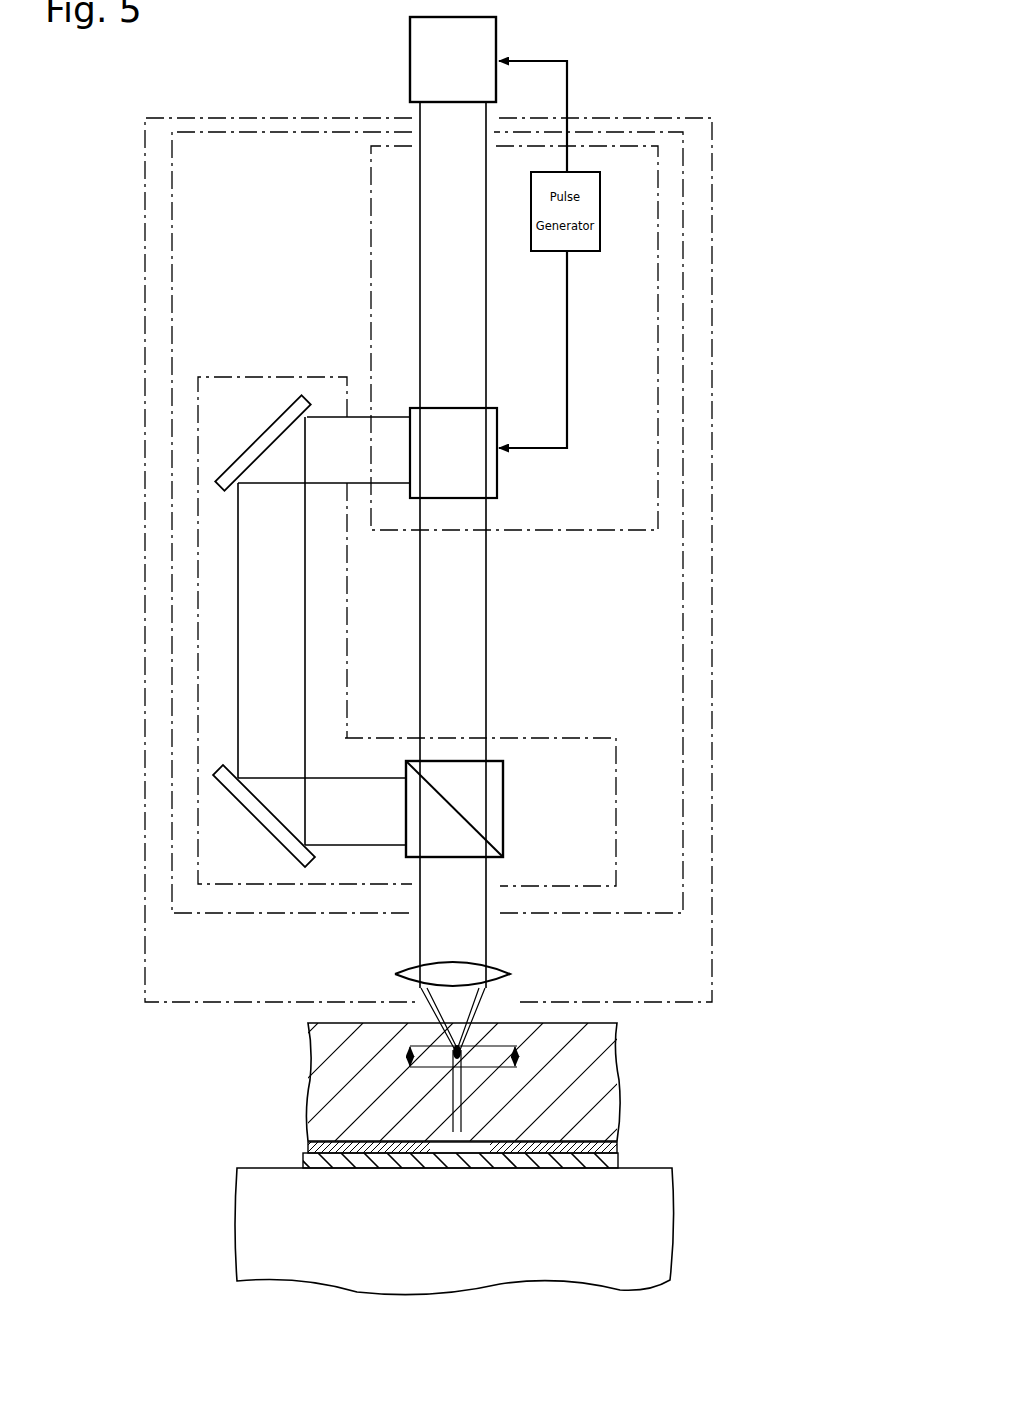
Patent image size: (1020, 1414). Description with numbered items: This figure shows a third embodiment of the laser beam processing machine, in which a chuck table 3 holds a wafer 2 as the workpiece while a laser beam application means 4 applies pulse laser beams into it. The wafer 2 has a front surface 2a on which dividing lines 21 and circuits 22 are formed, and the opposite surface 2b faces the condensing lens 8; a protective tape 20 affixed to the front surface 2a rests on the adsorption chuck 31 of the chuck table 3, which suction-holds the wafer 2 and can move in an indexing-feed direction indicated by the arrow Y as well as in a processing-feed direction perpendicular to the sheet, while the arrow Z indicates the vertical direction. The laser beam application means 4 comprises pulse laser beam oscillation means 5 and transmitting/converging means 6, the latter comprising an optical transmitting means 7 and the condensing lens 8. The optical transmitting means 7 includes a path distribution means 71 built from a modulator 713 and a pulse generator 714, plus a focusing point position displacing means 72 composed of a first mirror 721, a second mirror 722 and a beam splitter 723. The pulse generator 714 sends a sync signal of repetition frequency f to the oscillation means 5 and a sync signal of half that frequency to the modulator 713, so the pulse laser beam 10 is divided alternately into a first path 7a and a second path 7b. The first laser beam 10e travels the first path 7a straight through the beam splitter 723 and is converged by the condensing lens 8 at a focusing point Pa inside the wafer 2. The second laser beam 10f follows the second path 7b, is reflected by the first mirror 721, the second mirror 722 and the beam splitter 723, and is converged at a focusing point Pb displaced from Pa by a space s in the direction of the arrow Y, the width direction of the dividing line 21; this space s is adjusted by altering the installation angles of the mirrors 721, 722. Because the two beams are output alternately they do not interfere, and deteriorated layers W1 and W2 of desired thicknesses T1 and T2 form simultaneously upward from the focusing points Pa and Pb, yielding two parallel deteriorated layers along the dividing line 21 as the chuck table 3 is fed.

The laser beam application means 4 is at (747, 87).
The pulse laser beam oscillation means 5 is at (410, 46).
The transmitting/converging means 6 is at (716, 420).
The optical transmitting means 7 is at (687, 355).
The first path 7a is at (506, 618).
The second path 7b is at (362, 404).
The path distribution means 71 is at (663, 214).
The modulator 713 is at (498, 427).
The pulse generator 714 is at (600, 197).
The focusing point position displacing means 72 is at (250, 375).
The first mirror 721 is at (258, 441).
The second mirror 722 is at (262, 815).
The beam splitter 723 is at (505, 789).
The pulse laser beam 10 is at (419, 190).
The first laser beam 10e is at (418, 592).
The second laser beam 10f is at (323, 486).
The condensing lens 8 is at (492, 976).
The wafer 2 is at (607, 1086).
The front surface 2a is at (612, 1168).
The front surface of workpiece 2b is at (591, 1022).
The protective tape 20 is at (305, 1158).
The dividing line 21 is at (463, 1160).
The circuit 22 is at (372, 1168).
The chuck table 3 is at (236, 1218).
The adsorption chuck 31 is at (652, 1167).
The thickness T1 is at (445, 1056).
The thickness T2 is at (534, 1059).
The deteriorated layer W1 is at (440, 1068).
The deteriorated layer W2 is at (460, 1060).
The focusing point Pa is at (452, 1080).
The focusing point Pb is at (462, 1068).
The space s is at (481, 1118).
The Z-axis direction Z is at (289, 1058).
The arrow Y is at (433, 1312).